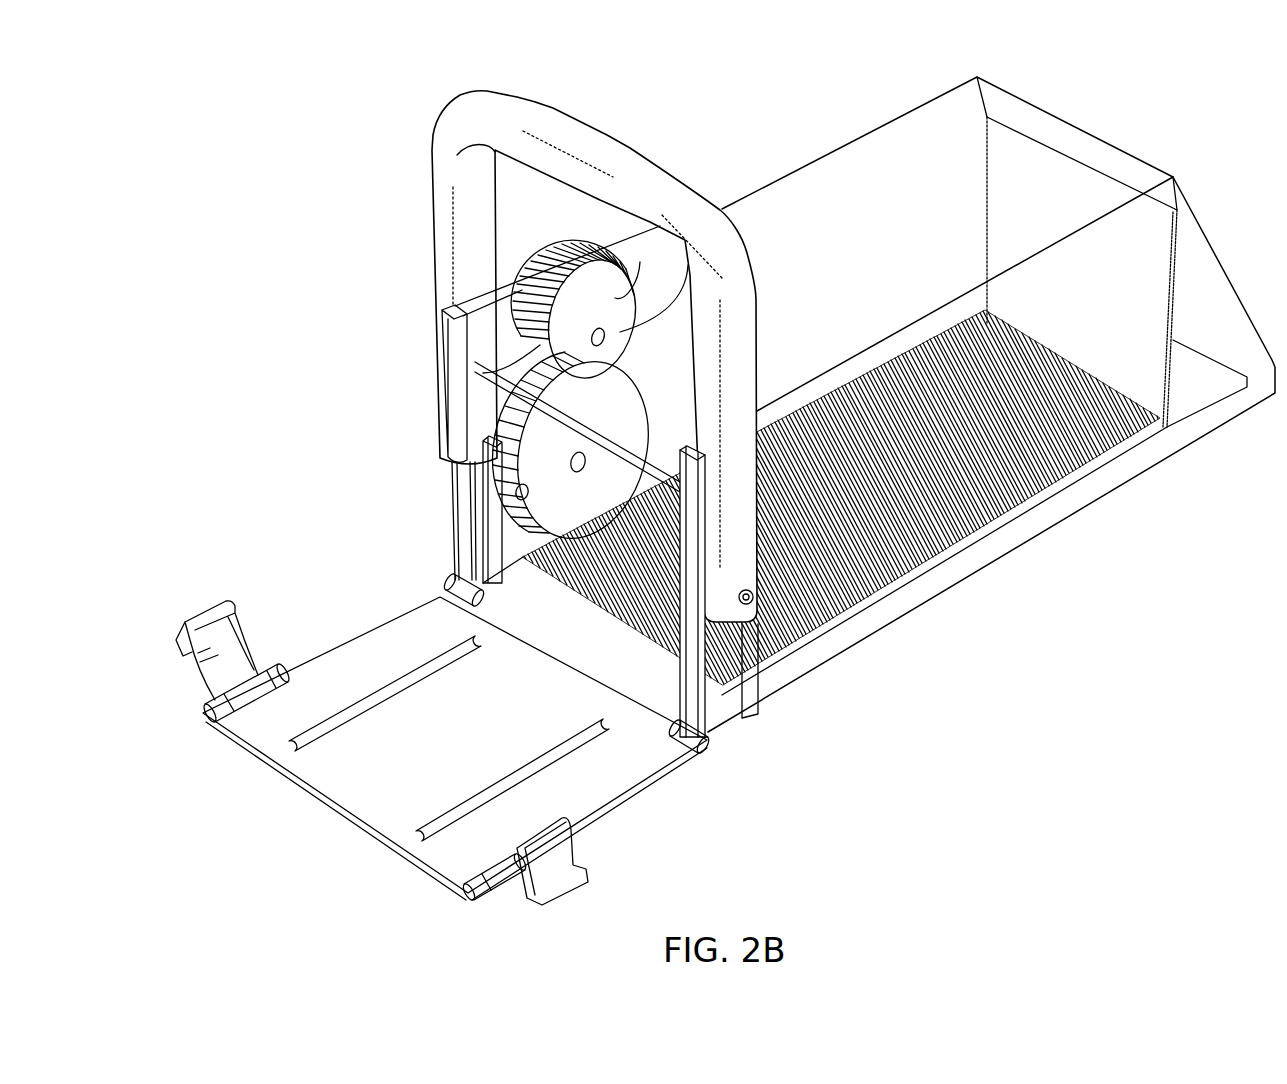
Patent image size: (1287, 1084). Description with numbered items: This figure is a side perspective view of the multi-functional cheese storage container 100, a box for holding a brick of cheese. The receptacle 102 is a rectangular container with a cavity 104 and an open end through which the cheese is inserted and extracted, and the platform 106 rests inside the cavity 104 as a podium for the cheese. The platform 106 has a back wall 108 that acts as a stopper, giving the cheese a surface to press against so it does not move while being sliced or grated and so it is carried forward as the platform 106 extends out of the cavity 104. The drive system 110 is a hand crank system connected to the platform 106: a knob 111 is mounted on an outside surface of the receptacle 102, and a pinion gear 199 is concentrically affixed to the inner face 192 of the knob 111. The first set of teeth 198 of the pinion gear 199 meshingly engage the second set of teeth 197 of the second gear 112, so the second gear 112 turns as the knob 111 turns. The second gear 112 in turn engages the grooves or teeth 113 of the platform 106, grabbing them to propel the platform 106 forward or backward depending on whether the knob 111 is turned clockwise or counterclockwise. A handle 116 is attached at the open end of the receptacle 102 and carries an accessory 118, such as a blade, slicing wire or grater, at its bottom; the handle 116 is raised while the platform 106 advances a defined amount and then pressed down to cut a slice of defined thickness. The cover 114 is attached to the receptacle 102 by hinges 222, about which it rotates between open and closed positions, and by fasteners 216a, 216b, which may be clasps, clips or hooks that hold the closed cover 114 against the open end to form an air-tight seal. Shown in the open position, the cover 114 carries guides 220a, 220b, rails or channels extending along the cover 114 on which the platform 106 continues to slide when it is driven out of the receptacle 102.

The multi-functional cheese storage container 100 is at (233, 122).
The receptacle 102 is at (810, 178).
The cavity 104 is at (928, 259).
The platform 106 is at (893, 543).
The back wall 108 is at (1153, 313).
The drive system 110 is at (522, 411).
The knob 111 is at (556, 250).
The second gear 112 is at (568, 521).
The grooves or teeth 113 is at (530, 545).
The cover 114 is at (352, 803).
The handle 116 is at (444, 186).
The accessory 118 is at (593, 497).
The inner face 192 is at (483, 373).
The second set of teeth 197 is at (505, 514).
The first set of teeth 198 is at (640, 262).
The pinion gear 199 is at (688, 265).
The fastener 216a is at (207, 678).
The fastener 216b is at (575, 870).
The guide 220a is at (443, 666).
The guide 220b is at (562, 752).
The hinges 222 is at (450, 580).